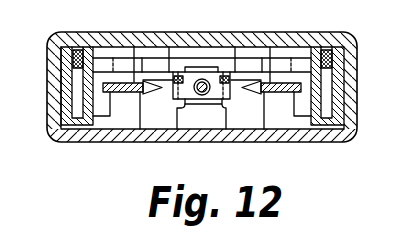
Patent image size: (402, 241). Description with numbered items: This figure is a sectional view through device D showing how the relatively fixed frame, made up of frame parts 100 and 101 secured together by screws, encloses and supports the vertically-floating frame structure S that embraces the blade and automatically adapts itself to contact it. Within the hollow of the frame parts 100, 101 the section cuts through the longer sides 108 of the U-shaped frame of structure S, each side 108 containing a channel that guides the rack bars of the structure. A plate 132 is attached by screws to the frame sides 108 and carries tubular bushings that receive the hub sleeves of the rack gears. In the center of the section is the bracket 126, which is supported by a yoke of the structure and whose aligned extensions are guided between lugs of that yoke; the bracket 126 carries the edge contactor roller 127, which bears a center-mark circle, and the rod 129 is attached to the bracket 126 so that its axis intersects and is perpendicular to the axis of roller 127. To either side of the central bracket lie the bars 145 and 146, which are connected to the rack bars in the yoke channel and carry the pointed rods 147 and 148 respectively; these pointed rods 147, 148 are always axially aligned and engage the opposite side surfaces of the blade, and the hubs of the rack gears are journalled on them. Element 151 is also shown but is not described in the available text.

The frame part 100 is at (197, 66).
The frame part 101 is at (137, 141).
The longer sides 108 is at (88, 57).
The bracket 126 is at (176, 129).
The edge contactor roller 127 is at (224, 110).
The rod 129 is at (207, 81).
The plate 132 is at (201, 99).
The bar 145 is at (279, 83).
The bar 146 is at (122, 82).
The pointed rod 147 is at (251, 94).
The pointed rod 148 is at (158, 94).
The stop block 151 is at (76, 49).